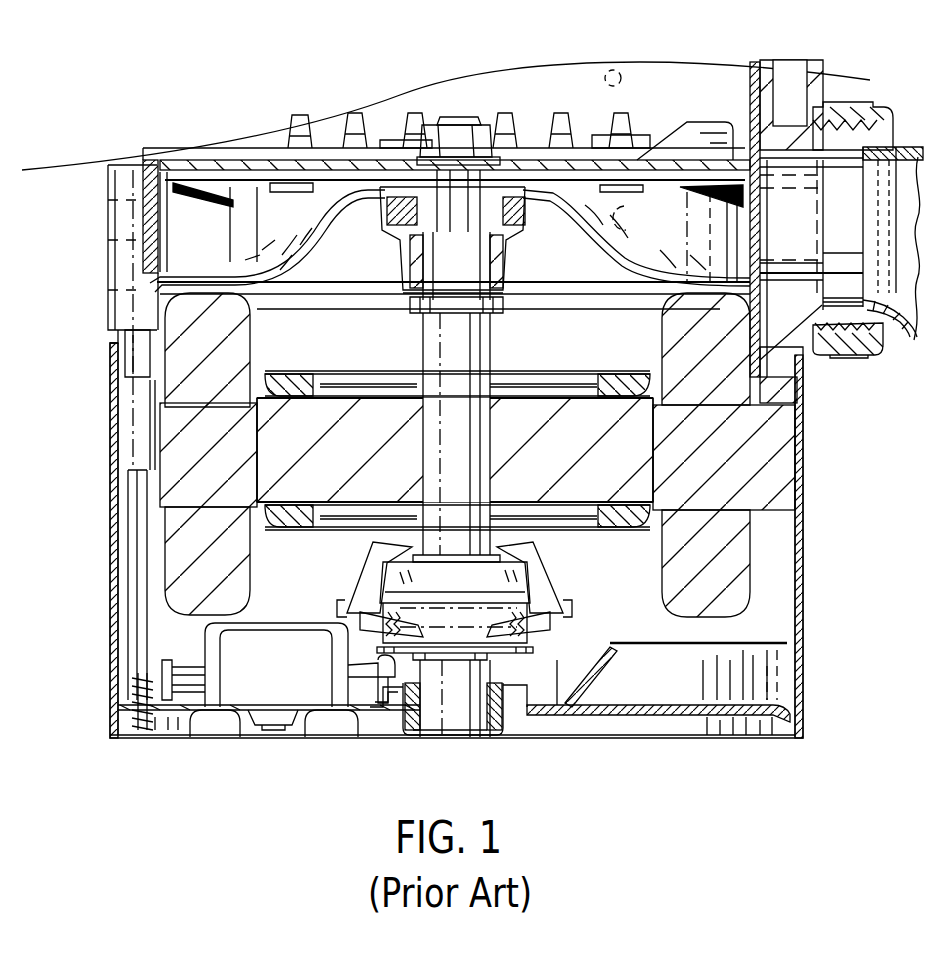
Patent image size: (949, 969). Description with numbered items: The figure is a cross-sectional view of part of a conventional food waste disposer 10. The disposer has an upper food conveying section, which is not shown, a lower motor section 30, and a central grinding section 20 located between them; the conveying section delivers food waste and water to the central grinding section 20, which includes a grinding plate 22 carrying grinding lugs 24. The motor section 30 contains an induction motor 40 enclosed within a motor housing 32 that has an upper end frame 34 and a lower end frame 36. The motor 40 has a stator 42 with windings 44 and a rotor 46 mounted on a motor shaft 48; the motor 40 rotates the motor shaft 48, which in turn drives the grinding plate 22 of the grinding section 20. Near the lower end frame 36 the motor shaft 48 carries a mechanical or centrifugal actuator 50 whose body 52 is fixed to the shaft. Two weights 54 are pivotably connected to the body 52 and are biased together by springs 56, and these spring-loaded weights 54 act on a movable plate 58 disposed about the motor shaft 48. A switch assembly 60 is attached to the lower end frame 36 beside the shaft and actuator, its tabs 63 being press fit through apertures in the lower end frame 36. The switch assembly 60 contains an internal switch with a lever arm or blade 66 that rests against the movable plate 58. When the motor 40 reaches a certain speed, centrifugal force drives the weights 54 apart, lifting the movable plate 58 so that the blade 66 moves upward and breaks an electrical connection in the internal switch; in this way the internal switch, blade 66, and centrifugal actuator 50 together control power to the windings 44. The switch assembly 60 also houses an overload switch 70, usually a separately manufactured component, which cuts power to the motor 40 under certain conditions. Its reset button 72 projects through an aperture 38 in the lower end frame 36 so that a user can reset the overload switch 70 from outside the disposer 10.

The food waste disposer 10 is at (86, 105).
The central grinding section 20 is at (250, 106).
The grinding plate 22 is at (382, 162).
The grinding lugs 24 is at (695, 150).
The lower motor section 30 is at (97, 443).
The motor housing 32 is at (110, 500).
The upper end frame 34 is at (613, 243).
The lower end frame 36 is at (637, 712).
The aperture 38 is at (243, 725).
The induction motor 40 is at (352, 360).
The stator 42 is at (732, 474).
The windings 44 is at (704, 562).
The rotor 46 is at (370, 454).
The motor shaft 48 is at (470, 454).
The centrifugal actuator 50 is at (595, 562).
The body 52 is at (470, 592).
The weights 54 is at (548, 622).
The springs 56 is at (405, 608).
The movable plate 58 is at (524, 658).
The switch assembly 60 is at (282, 620).
The tabs 63 is at (190, 712).
The lever arm or blade 66 is at (385, 705).
The overload switch 70 is at (284, 677).
The reset button 72 is at (283, 730).